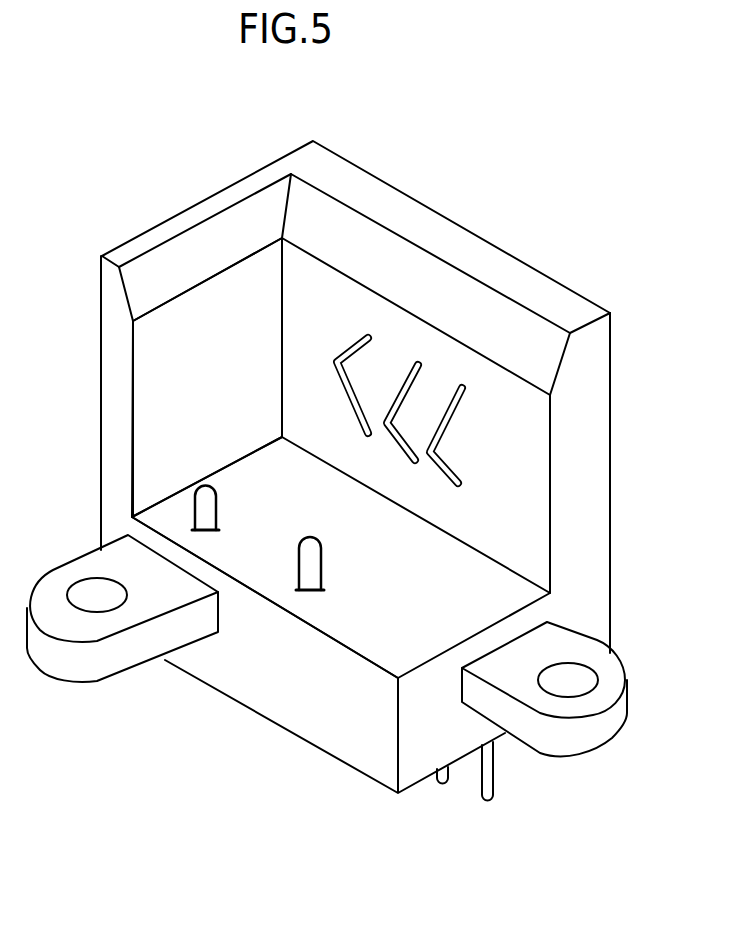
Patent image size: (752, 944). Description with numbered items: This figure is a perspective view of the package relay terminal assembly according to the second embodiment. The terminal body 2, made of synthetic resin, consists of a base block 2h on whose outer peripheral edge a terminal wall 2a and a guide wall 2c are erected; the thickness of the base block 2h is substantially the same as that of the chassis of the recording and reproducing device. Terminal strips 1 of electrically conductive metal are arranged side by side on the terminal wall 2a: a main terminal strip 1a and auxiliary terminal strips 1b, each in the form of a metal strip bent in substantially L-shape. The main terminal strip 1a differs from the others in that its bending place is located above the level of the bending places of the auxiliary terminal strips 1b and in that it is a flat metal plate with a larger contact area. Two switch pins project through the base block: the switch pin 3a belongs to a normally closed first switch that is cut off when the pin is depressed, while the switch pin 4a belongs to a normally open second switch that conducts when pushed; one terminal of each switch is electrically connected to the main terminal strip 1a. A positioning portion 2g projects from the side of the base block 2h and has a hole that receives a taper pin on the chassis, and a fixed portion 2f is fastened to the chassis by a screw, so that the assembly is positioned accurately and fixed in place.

The terminal strips 1 is at (478, 177).
The main terminal strip 1a is at (368, 338).
The auxiliary terminal strips 1b is at (462, 388).
The terminal body 2 is at (70, 772).
The terminal wall 2a is at (463, 528).
The guide wall 2c is at (233, 437).
The fixed portion 2f is at (493, 678).
The positioning portion 2g is at (121, 673).
The base block 2h is at (350, 617).
The switch pin 3a is at (200, 505).
The switch pin 4a is at (312, 566).